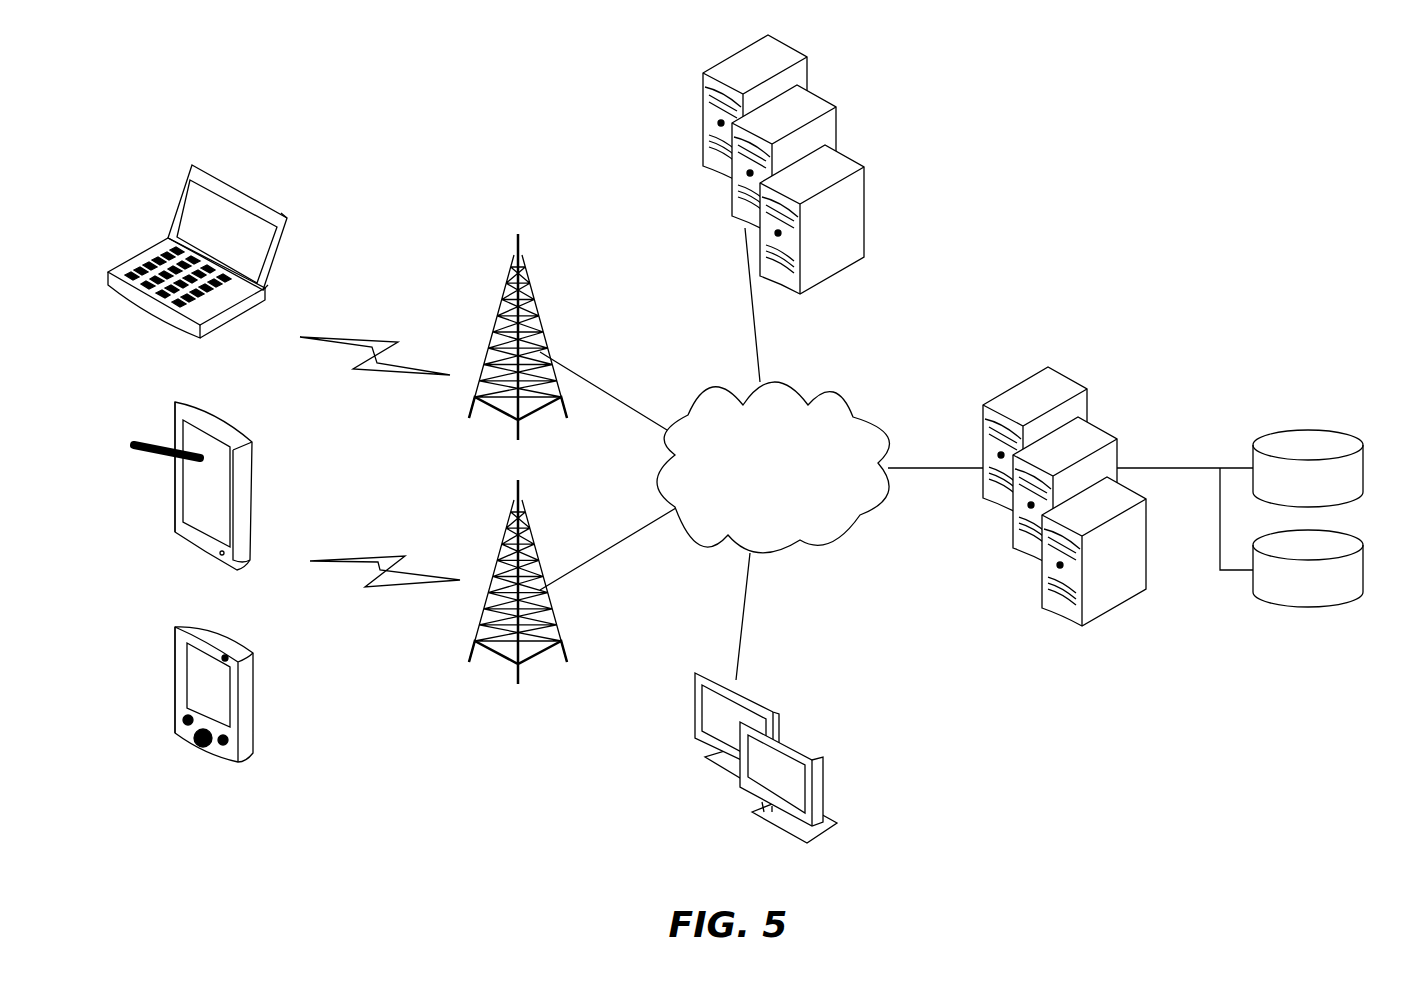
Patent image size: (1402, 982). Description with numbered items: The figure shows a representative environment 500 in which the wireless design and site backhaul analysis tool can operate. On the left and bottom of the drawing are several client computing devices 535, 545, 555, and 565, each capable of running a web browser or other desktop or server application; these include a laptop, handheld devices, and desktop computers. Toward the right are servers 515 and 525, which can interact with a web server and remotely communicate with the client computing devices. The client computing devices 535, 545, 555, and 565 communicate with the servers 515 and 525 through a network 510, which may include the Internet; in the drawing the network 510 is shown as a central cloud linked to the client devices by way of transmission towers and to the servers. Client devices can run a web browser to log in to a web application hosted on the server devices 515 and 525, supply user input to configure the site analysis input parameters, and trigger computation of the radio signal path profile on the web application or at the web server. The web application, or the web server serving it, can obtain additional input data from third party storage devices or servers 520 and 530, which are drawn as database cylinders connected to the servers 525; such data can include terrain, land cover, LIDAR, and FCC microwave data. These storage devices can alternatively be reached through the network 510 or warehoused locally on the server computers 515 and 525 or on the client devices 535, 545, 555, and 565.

The representative environment 500 is at (1078, 188).
The network 510 is at (838, 382).
The server 515 is at (828, 98).
The third party storage device or server 520 is at (1310, 430).
The server 525 is at (1107, 430).
The third party storage device or server 530 is at (1310, 607).
The client computing device 535 is at (180, 195).
The client computing device 545 is at (173, 413).
The client computing device 555 is at (177, 645).
The client computing device 565 is at (789, 731).